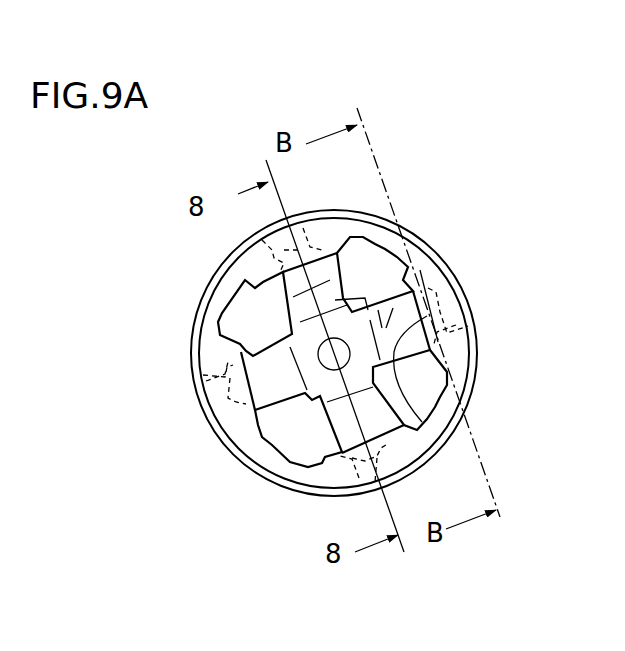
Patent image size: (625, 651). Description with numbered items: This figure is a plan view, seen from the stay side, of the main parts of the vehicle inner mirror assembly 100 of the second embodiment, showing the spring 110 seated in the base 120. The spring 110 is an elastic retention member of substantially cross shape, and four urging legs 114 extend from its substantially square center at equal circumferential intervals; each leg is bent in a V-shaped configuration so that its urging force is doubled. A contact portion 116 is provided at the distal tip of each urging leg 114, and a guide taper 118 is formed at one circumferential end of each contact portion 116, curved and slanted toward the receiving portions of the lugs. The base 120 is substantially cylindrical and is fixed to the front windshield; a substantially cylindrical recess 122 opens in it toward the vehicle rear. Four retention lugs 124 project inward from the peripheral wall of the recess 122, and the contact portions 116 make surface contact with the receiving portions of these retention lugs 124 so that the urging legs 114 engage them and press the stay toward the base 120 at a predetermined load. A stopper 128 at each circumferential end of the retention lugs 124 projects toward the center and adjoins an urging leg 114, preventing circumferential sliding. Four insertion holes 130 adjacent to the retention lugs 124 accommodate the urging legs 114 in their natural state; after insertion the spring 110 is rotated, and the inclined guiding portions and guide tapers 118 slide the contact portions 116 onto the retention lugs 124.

The motor 100 is at (374, 80).
The spring 110 is at (287, 334).
The urging legs 114 is at (335, 352).
The contact portion 116 is at (262, 242).
The guide taper 118 is at (306, 222).
The base 120 is at (429, 242).
The recess 122 is at (243, 440).
The retention lugs 124 is at (432, 466).
The stopper 128 is at (240, 349).
The insertion hole 130 is at (372, 213).